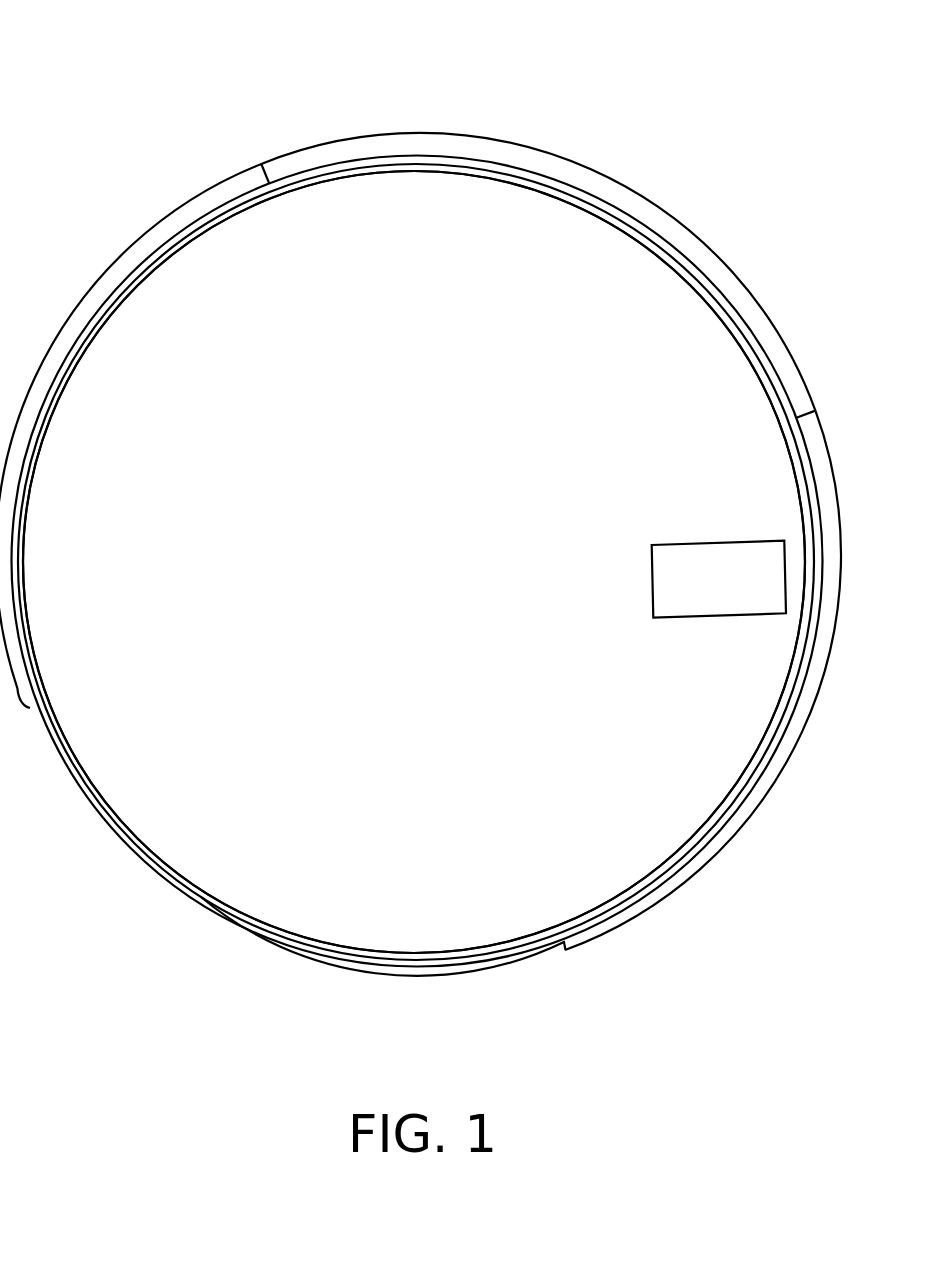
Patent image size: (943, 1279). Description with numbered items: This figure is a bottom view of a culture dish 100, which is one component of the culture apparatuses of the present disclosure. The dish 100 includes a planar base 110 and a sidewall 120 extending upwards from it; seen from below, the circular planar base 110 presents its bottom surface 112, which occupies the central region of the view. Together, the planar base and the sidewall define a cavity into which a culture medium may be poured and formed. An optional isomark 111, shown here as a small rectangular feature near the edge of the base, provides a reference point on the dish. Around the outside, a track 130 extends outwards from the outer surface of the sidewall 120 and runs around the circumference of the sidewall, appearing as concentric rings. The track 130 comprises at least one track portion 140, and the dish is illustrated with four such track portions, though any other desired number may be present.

The culture dish 100 is at (118, 45).
The planar base 110 is at (305, 392).
The isomark 111 is at (786, 593).
The bottom surface 112 is at (457, 532).
The sidewall 120 is at (768, 353).
The track 130 is at (693, 257).
The track portion 140 is at (569, 175).